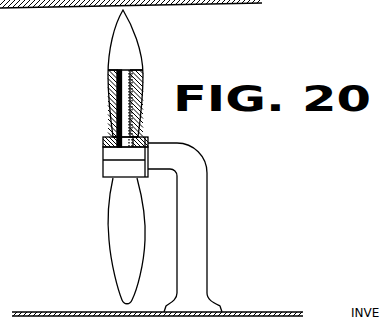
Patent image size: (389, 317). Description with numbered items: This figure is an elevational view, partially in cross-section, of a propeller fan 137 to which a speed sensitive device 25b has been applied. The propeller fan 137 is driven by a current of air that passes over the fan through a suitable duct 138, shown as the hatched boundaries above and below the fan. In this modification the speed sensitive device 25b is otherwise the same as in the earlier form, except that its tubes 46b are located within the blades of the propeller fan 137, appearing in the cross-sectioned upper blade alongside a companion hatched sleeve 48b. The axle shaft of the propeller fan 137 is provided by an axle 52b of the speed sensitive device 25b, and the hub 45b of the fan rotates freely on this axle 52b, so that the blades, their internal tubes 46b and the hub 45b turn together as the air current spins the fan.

The duct 138 is at (43, 7).
The propeller fan 137 is at (130, 44).
The socket sleeve 48b is at (115, 97).
The tubes 46b is at (134, 98).
The speed sensitive device 25b is at (121, 125).
The hub 45b is at (141, 138).
The axle 52b is at (113, 160).